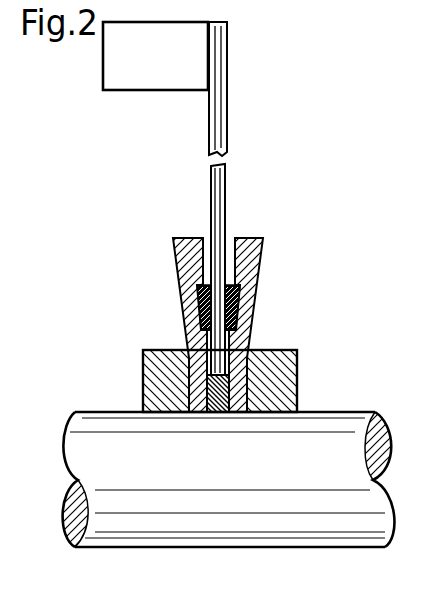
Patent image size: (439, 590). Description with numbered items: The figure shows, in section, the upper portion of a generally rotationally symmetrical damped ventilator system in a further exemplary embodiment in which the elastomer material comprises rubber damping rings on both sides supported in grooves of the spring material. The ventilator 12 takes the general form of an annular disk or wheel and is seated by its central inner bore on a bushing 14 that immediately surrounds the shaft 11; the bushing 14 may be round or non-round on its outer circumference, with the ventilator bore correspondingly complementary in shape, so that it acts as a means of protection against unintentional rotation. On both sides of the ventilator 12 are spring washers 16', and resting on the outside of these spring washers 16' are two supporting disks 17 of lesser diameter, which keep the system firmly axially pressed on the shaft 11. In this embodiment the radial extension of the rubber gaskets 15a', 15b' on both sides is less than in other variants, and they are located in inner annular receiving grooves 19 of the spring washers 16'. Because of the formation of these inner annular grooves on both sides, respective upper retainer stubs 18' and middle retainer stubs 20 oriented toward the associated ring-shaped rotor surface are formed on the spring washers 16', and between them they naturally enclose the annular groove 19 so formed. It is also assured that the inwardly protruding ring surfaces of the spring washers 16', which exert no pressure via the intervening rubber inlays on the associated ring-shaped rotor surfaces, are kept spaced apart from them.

The shaft 11 is at (110, 438).
The ventilator 12 is at (218, 187).
The bushing 14 is at (218, 392).
The rubber gasket 15a' is at (139, 285).
The rubber gasket 15b' is at (293, 285).
The spring washer 16' is at (261, 295).
The supporting disk 17 is at (286, 362).
The upper retainer stub 18' is at (208, 311).
The inner annular receiving groove 19 is at (206, 302).
The middle retainer stub 20 is at (202, 332).